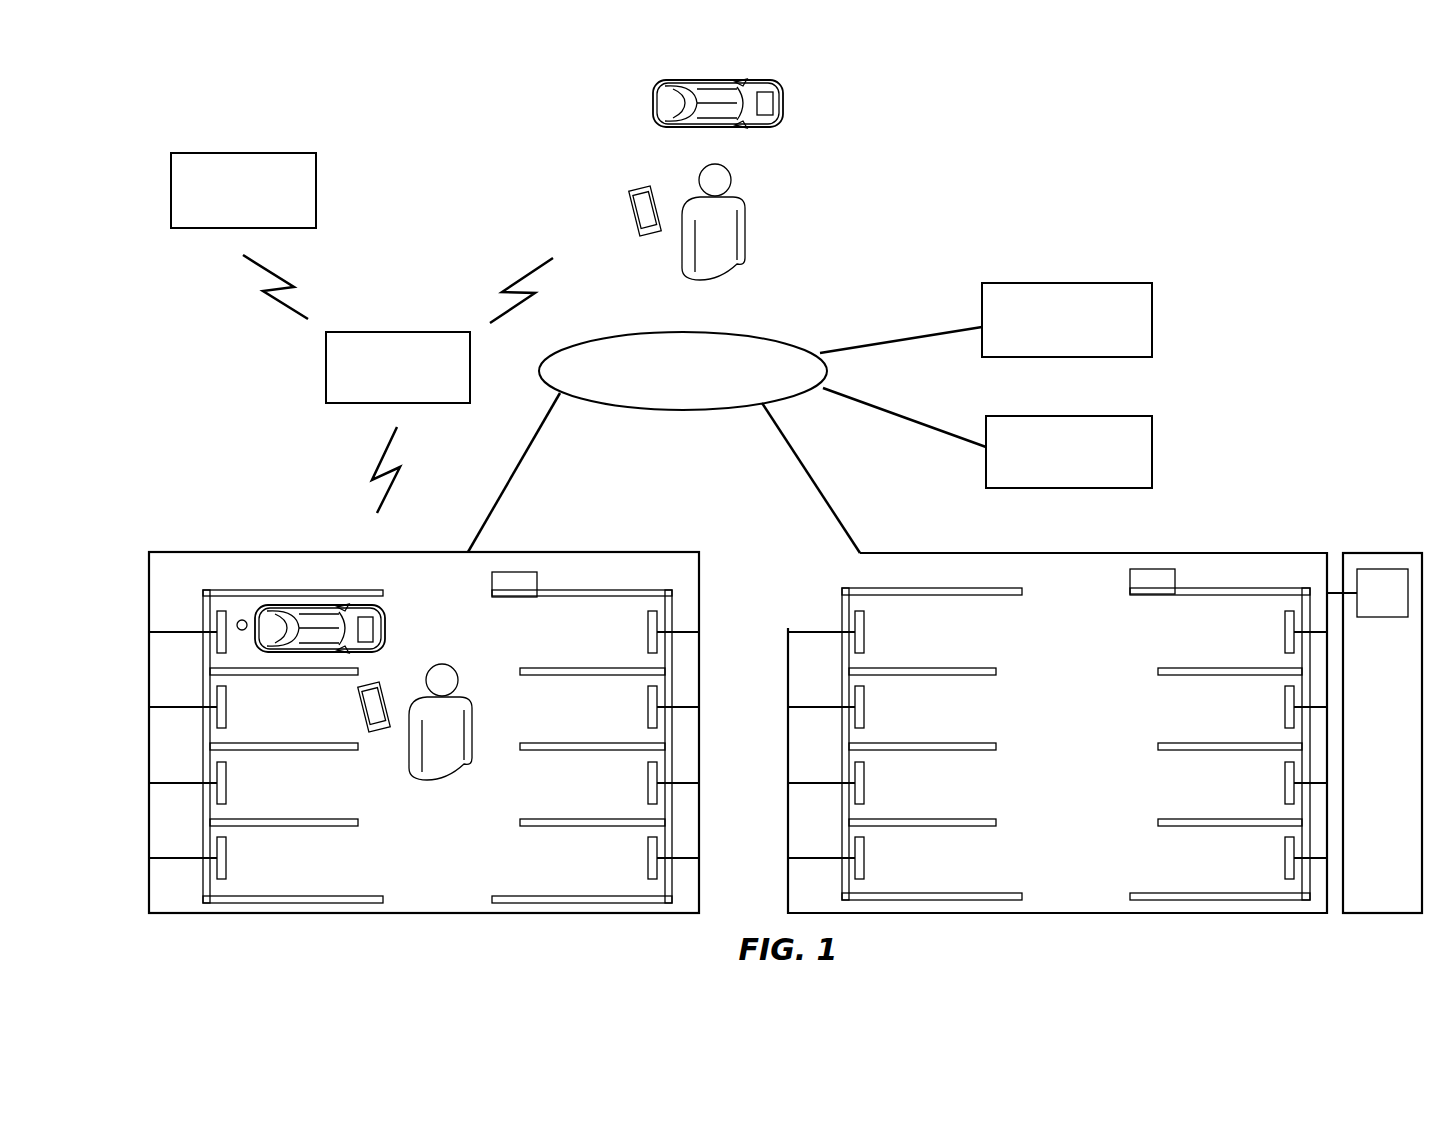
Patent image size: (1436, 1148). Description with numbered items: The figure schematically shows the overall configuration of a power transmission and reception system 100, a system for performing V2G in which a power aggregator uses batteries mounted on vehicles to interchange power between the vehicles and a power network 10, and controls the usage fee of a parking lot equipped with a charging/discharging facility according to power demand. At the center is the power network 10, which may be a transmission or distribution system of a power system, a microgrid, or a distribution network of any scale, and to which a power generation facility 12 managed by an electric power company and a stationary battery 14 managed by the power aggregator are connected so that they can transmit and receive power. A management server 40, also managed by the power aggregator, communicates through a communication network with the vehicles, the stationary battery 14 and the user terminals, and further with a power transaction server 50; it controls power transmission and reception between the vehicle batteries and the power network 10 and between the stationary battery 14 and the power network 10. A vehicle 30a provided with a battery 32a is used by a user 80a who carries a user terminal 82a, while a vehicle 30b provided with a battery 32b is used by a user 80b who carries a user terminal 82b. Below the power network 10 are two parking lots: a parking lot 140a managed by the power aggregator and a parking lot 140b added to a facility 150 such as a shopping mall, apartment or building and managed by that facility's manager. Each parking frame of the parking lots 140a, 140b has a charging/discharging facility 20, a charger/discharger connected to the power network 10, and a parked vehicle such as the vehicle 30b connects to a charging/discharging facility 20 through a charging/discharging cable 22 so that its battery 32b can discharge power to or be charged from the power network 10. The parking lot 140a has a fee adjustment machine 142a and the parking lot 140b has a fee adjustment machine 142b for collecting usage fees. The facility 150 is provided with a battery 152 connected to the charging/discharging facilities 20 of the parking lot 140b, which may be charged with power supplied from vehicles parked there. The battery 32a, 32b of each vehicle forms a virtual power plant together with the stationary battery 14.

The power transmission and reception system 100 is at (1419, 75).
The power network 10 is at (743, 333).
The power generation facility 12 is at (1108, 416).
The stationary battery 14 is at (1107, 283).
The charging/discharging facility 20 is at (217, 620).
The charging/discharging cable 22 is at (243, 620).
The vehicle 30a is at (680, 80).
The vehicle 30b is at (290, 605).
The battery 32a is at (765, 82).
The battery 32b is at (368, 607).
The management server 40 is at (425, 332).
The power transaction server 50 is at (265, 153).
The user 80a is at (731, 170).
The user 80b is at (458, 670).
The user terminal 82a is at (643, 190).
The user terminal 82b is at (378, 682).
The parking lot 140a is at (468, 867).
The parking lot 140b is at (1106, 867).
The fee adjustment machine 142a is at (510, 597).
The fee adjustment machine 142b is at (1145, 595).
The facility 150 is at (1402, 747).
The battery 152 is at (1380, 569).